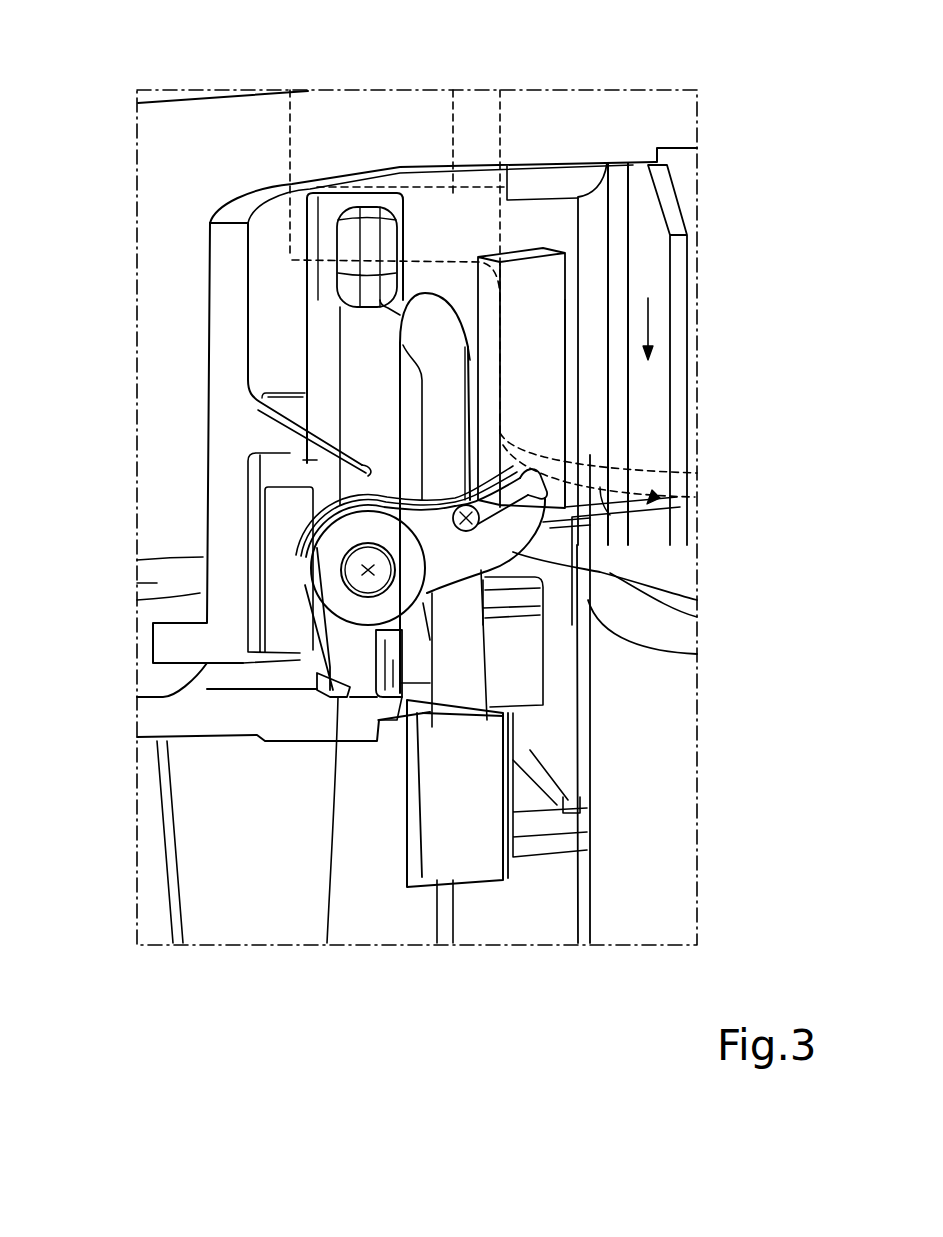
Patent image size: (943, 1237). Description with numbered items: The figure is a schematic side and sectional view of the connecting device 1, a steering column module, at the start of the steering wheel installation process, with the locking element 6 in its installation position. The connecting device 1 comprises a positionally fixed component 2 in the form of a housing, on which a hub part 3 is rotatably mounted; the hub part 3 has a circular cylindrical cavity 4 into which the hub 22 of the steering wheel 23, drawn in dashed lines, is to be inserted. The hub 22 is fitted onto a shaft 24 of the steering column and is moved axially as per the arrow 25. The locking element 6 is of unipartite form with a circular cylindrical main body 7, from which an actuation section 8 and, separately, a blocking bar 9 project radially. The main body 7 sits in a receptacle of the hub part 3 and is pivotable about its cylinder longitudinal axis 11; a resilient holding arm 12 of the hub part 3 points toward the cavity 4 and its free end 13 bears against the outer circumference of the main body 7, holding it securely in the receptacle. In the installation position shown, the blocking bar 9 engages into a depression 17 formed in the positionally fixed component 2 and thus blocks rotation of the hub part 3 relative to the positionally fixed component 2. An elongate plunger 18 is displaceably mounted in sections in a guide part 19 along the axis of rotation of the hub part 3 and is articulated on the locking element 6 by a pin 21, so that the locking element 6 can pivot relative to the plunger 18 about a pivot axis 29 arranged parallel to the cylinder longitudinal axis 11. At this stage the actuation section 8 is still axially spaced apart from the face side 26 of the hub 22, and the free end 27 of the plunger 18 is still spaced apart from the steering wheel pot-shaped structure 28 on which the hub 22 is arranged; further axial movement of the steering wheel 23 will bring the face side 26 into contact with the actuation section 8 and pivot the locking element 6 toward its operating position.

The connecting device 1 is at (242, 70).
The positionally fixed component 2 is at (152, 716).
The hub part 3 is at (237, 415).
The cavity 4 is at (565, 875).
The locking element 6 is at (300, 528).
The main body 7 is at (330, 557).
The actuation section 8 is at (512, 538).
The blocking bar 9 is at (333, 697).
The cylinder longitudinal axis 11 is at (365, 572).
The holding arm 12 is at (242, 423).
The free end 13 is at (317, 461).
The depression 17 is at (350, 693).
The plunger 18 is at (413, 330).
The guide part 19 is at (480, 865).
The pin 21 is at (600, 578).
The hub 22 is at (658, 490).
The steering wheel 23 is at (300, 89).
The shaft 24 is at (685, 690).
The arrow 25 is at (648, 327).
The face side 26 is at (646, 486).
The free end 27 is at (433, 297).
The steering wheel pot-shaped structure 28 is at (422, 227).
The pivot axis 29 is at (478, 522).